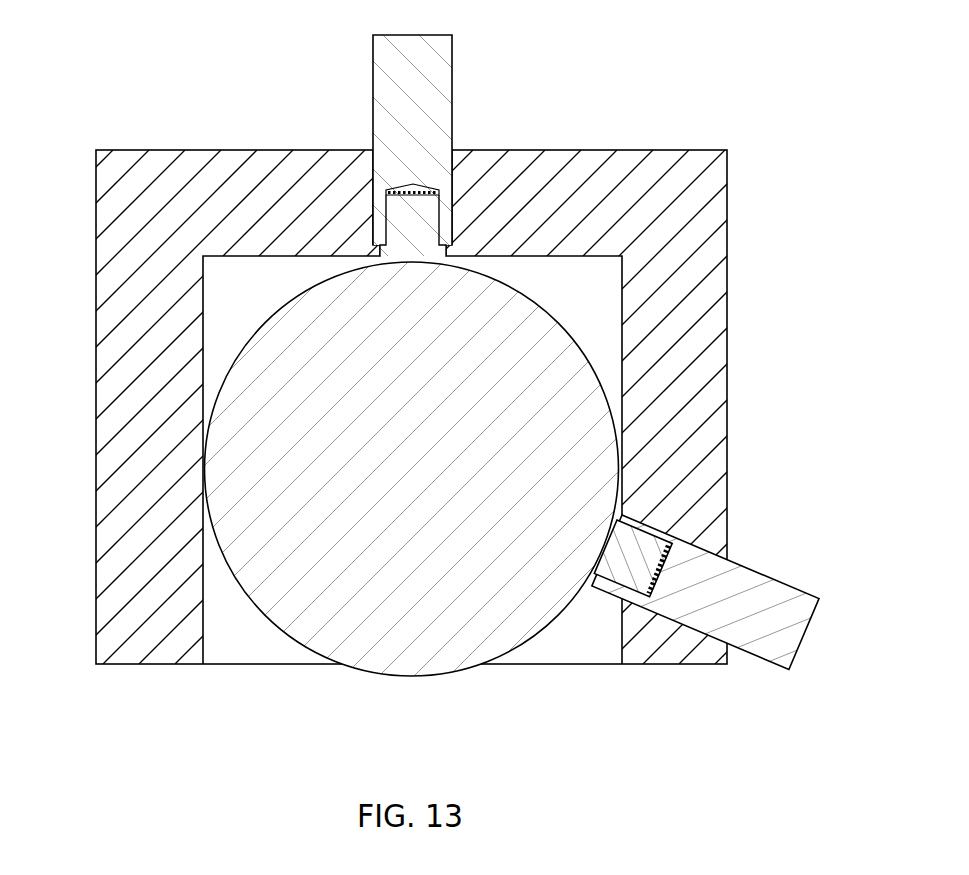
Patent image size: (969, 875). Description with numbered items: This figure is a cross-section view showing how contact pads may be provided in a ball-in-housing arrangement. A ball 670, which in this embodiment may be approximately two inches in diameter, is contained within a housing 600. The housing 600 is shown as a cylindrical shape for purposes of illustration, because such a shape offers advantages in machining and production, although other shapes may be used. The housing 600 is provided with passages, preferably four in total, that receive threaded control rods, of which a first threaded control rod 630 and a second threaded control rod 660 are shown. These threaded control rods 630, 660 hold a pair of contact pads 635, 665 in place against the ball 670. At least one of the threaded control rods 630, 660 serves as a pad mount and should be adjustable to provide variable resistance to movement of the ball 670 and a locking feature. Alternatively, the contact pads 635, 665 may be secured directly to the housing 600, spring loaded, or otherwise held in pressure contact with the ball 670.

The housing 600 is at (116, 215).
The threaded control rod 630 is at (452, 42).
The contact pad 635 is at (395, 209).
The threaded control rod 660 is at (807, 620).
The contact pad 665 is at (660, 532).
The ball 670 is at (399, 663).